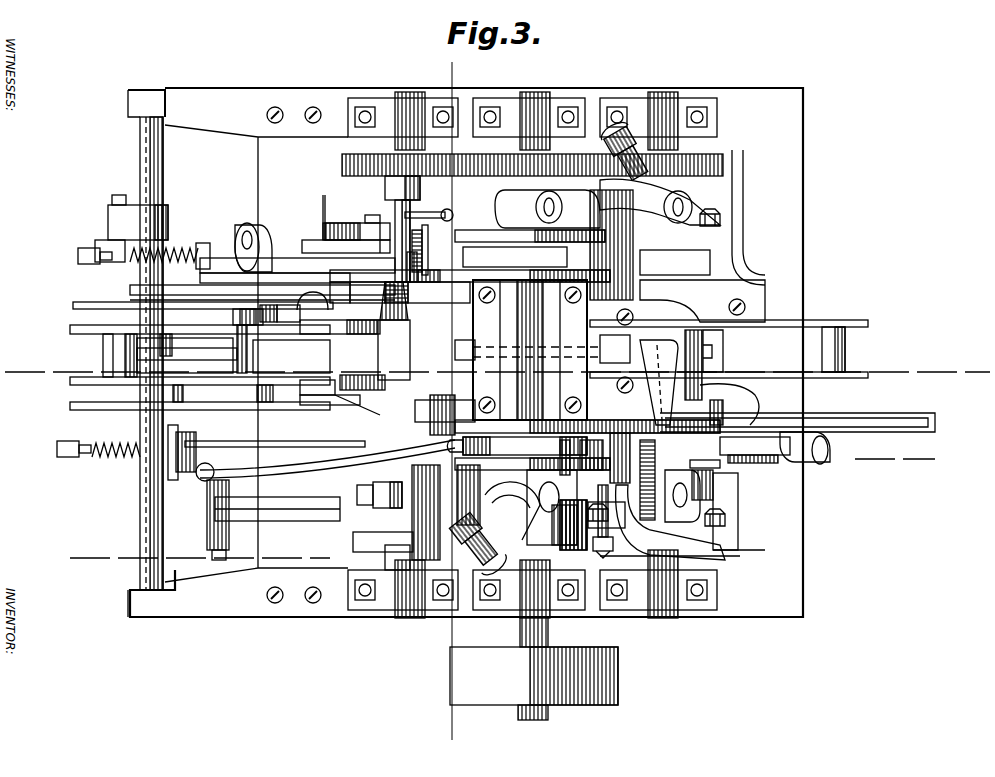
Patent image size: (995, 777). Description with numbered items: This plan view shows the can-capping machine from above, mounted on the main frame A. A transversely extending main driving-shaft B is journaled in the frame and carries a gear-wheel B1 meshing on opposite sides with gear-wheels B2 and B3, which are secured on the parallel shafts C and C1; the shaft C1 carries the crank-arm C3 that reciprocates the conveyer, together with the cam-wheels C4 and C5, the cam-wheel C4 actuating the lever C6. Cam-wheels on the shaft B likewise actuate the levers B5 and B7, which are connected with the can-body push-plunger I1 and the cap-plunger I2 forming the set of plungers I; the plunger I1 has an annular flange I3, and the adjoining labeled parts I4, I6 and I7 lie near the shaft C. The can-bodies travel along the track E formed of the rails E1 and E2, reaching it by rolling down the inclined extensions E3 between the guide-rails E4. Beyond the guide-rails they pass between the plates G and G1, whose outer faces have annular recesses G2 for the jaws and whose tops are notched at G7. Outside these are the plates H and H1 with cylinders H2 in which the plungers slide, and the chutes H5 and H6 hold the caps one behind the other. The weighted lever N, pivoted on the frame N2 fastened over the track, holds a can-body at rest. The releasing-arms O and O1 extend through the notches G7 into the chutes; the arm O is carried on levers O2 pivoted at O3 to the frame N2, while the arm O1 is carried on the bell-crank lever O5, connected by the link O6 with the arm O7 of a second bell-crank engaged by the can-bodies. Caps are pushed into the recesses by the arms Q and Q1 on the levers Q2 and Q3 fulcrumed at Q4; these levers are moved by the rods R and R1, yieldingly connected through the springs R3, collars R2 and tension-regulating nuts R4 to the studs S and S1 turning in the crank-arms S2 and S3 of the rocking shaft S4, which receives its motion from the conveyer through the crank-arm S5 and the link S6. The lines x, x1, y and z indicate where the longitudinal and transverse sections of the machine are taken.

The main frame A is at (803, 532).
The main driving-shaft B is at (548, 636).
The gear-wheel B1 is at (605, 170).
The gear-wheel B2 is at (342, 164).
The gear-wheel B3 is at (728, 152).
The lever B5 is at (527, 500).
The lever B7 is at (547, 204).
The shaft C is at (405, 570).
The shaft C1 is at (745, 556).
The crank-arm C3 is at (556, 532).
The cam-wheel C4 is at (743, 217).
The cam-wheel C5 is at (674, 515).
The lever C6 is at (660, 225).
The track E is at (70, 340).
The rail E1 is at (822, 388).
The rail E2 is at (828, 324).
The upward extensions E3 is at (82, 377).
The guide-rails E4 is at (88, 303).
The plate G is at (445, 415).
The plate G1 is at (439, 292).
The annular recesses G2 is at (369, 292).
The notch G7 is at (721, 404).
The plate H is at (447, 437).
The plate H1 is at (702, 289).
The cylinders H2 is at (575, 232).
The chute H5 is at (130, 288).
The chute H6 is at (910, 428).
The set of plungers I is at (517, 351).
The can-body push-plunger I1 is at (538, 394).
The cap-plunger I2 is at (516, 375).
The annular flange I3 is at (207, 510).
The block I4 is at (495, 500).
The link I6 is at (385, 486).
The block I7 is at (383, 542).
The weighted lever N is at (232, 363).
The frame N2 is at (250, 338).
The releasing-arm O is at (394, 331).
The releasing-arm O1 is at (681, 377).
The levers O2 is at (368, 322).
The pivot O3 is at (308, 393).
The bell-crank lever O5 is at (616, 351).
The link O6 is at (478, 350).
The arm O7 is at (457, 350).
The arm Q is at (240, 232).
The arm Q1 is at (816, 448).
The lever Q2 is at (310, 250).
The lever Q3 is at (778, 455).
The fulcrum Q4 is at (376, 212).
The rod R is at (220, 258).
The rod R1 is at (242, 450).
The collar R2 is at (196, 445).
The spring R3 is at (132, 445).
The nuts R4 is at (70, 470).
The stud S is at (118, 245).
The stud S1 is at (180, 436).
The crank-arm S2 is at (165, 210).
The crank-arm S3 is at (185, 392).
The shaft S4 is at (140, 503).
The crank-arm S5 is at (175, 344).
The link S6 is at (210, 360).
The section line x is at (497, 373).
The pin x1 is at (705, 458).
The section line y is at (503, 504).
The section line z is at (460, 402).